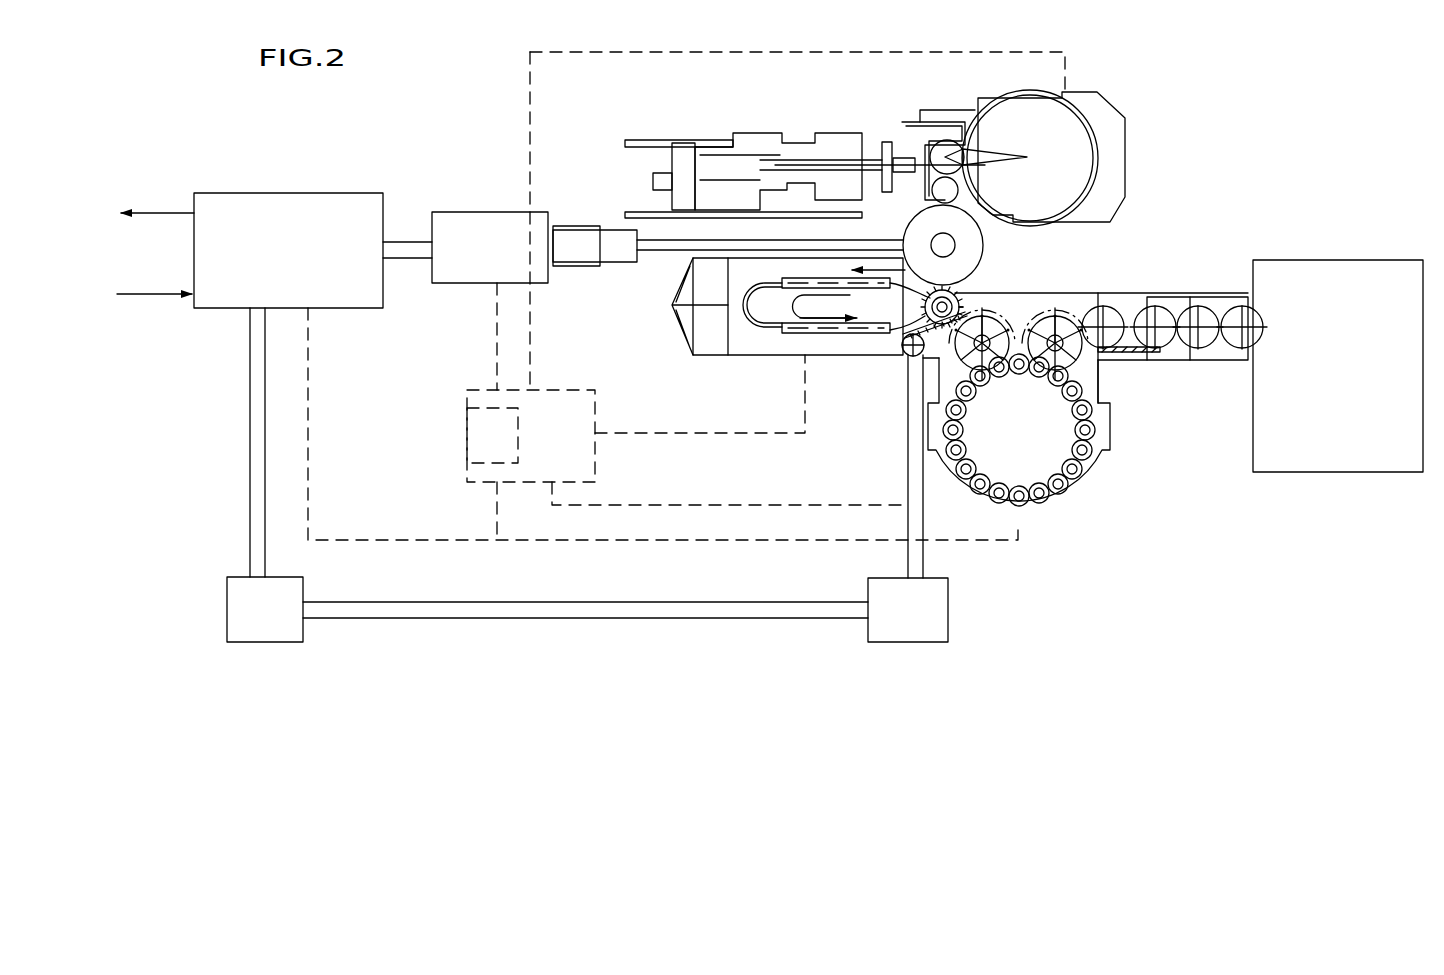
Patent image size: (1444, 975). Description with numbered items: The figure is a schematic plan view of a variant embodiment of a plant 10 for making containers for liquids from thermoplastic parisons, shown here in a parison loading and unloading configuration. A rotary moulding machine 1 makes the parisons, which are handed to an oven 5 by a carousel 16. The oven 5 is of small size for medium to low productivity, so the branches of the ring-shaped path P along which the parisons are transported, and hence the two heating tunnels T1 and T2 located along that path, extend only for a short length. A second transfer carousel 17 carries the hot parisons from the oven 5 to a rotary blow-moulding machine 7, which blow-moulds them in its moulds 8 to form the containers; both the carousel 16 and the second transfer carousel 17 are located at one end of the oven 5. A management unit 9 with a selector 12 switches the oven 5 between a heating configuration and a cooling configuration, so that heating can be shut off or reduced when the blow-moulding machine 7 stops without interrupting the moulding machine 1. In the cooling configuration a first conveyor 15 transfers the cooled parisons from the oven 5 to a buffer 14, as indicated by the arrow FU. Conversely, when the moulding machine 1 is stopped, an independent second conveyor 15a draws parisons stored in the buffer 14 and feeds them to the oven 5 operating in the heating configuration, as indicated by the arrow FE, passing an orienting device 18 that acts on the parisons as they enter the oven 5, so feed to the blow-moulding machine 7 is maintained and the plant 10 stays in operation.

The rotary moulding machine 1 is at (1100, 86).
The oven 5 is at (733, 332).
The rotary blow-moulding machine 7 is at (1062, 522).
The moulds 8 is at (1092, 462).
The management unit 9 is at (488, 386).
The plant 10 is at (1240, 164).
The selector 12 is at (508, 444).
The buffer 14 is at (297, 256).
The first conveyor 15 is at (258, 432).
The second conveyor 15a is at (660, 245).
The carousel 16 is at (902, 216).
The second transfer carousel 17 is at (1012, 302).
The orienting device 18 is at (502, 254).
The heating tunnel T1 is at (787, 275).
The heating tunnel T2 is at (798, 337).
The path P is at (820, 323).
The arrow FE is at (610, 217).
The arrow FU is at (895, 416).